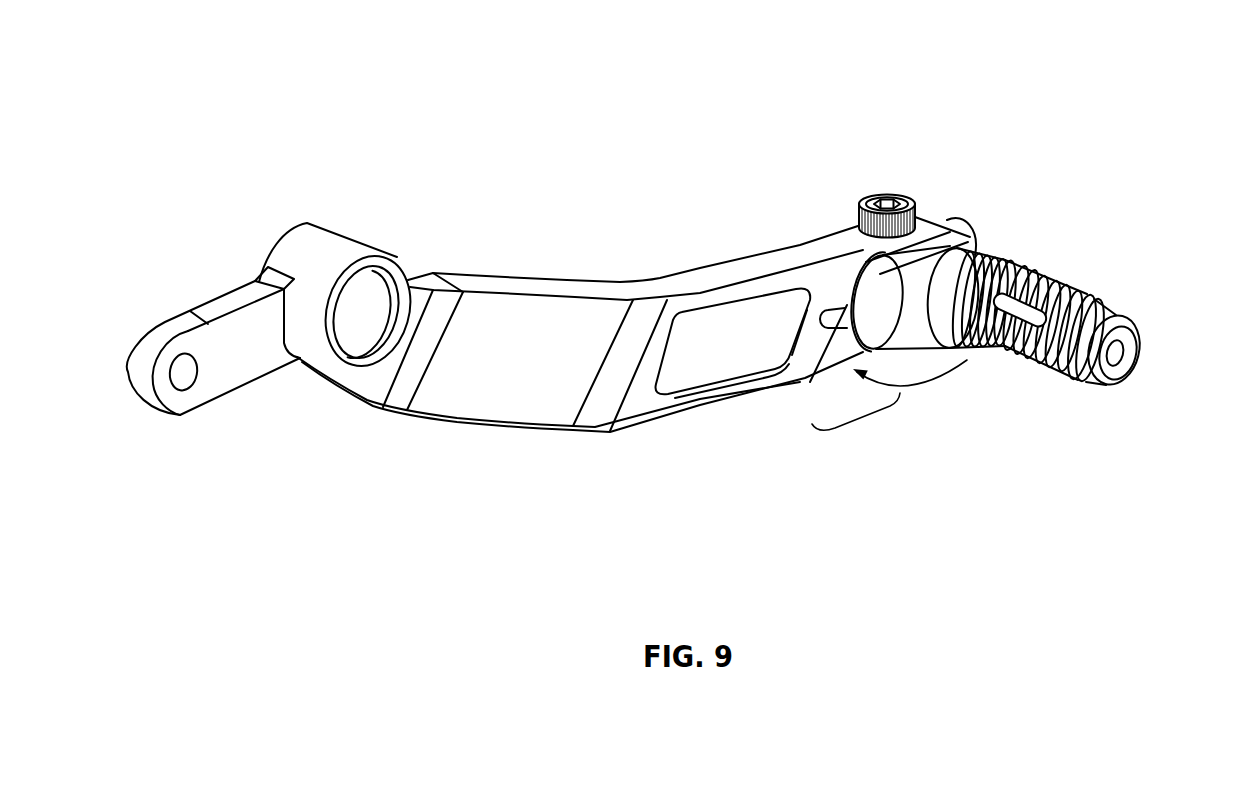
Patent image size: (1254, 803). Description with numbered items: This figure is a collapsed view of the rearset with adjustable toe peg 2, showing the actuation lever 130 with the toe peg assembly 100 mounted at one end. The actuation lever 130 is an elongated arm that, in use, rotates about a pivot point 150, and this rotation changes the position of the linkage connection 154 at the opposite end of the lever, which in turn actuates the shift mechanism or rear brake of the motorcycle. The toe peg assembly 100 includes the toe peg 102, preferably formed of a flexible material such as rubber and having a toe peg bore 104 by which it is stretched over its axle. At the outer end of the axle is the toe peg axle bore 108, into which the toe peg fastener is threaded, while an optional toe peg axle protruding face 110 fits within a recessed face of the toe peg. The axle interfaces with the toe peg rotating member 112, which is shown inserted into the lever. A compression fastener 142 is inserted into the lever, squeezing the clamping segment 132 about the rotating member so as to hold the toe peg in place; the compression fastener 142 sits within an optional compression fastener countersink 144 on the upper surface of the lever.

The rearset with adjustable toe peg 2 is at (455, 108).
The toe peg assembly 100 is at (1045, 130).
The toe peg 102 is at (1028, 343).
The toe peg bore 104 is at (1100, 312).
The toe peg axle bore 108 is at (1117, 350).
The toe peg axle protruding face 110 is at (992, 233).
The toe peg rotating member 112 is at (951, 222).
The actuation lever 130 is at (467, 238).
The clamping segment 132 is at (889, 402).
The compression fastener 142 is at (888, 195).
The compression fastener countersink 144 is at (858, 222).
The pivot point 150 is at (372, 332).
The linkage connection 154 is at (180, 388).